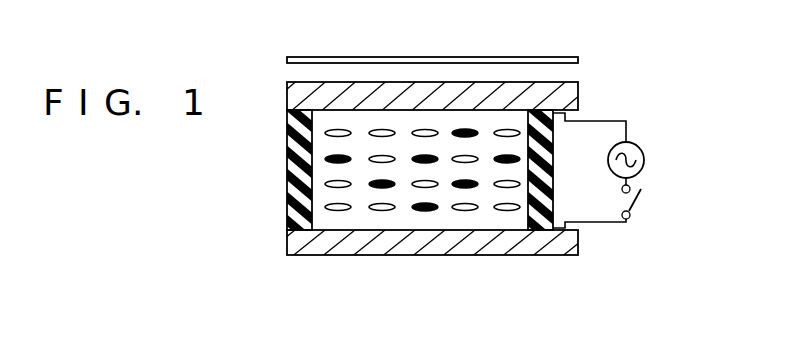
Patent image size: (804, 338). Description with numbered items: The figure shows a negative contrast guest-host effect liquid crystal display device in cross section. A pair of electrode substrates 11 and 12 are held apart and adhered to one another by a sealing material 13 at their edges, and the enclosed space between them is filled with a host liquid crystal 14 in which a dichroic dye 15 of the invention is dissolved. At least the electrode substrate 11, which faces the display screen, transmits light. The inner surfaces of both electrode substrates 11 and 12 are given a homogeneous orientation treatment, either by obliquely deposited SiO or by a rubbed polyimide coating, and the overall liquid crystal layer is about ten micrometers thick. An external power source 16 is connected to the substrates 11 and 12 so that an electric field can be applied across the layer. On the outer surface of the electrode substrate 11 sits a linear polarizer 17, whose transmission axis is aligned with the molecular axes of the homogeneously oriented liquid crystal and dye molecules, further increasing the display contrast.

The electrode substrate 11 is at (501, 93).
The electrode substrate 12 is at (489, 250).
The sealing material 13 is at (297, 160).
The host liquid crystal 14 is at (425, 129).
The dichroic dye 15 is at (465, 129).
The external power source 16 is at (645, 160).
The linear polarizer 17 is at (545, 57).